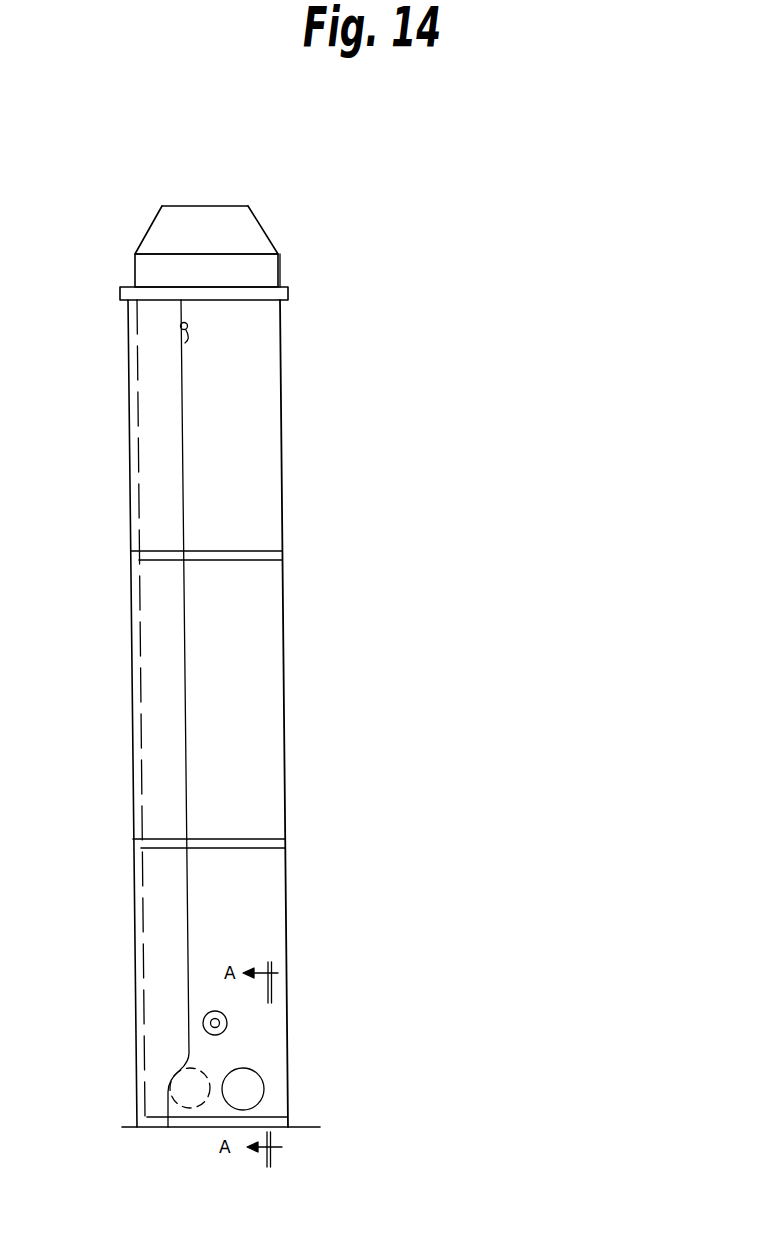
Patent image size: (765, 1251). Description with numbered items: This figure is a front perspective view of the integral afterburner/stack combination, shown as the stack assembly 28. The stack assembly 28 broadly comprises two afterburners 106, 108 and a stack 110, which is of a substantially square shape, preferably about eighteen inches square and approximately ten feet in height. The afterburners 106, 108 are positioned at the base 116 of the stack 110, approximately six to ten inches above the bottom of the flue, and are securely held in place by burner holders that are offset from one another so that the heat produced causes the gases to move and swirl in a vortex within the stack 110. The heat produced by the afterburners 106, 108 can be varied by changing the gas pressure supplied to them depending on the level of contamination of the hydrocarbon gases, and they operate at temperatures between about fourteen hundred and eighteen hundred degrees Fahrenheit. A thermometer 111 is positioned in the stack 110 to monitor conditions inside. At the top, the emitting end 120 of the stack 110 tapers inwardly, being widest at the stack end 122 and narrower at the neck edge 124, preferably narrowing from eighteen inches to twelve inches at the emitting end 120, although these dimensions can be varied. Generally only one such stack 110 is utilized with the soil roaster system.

The stack assembly 28 is at (302, 532).
The afterburner 106 is at (192, 1090).
The afterburner 108 is at (243, 1091).
The stack 110 is at (263, 711).
The thermometer 111 is at (188, 327).
The base 116 is at (299, 1125).
The emitting end 120 is at (195, 215).
The stack end 122 is at (255, 255).
The neck edge 124 is at (230, 208).